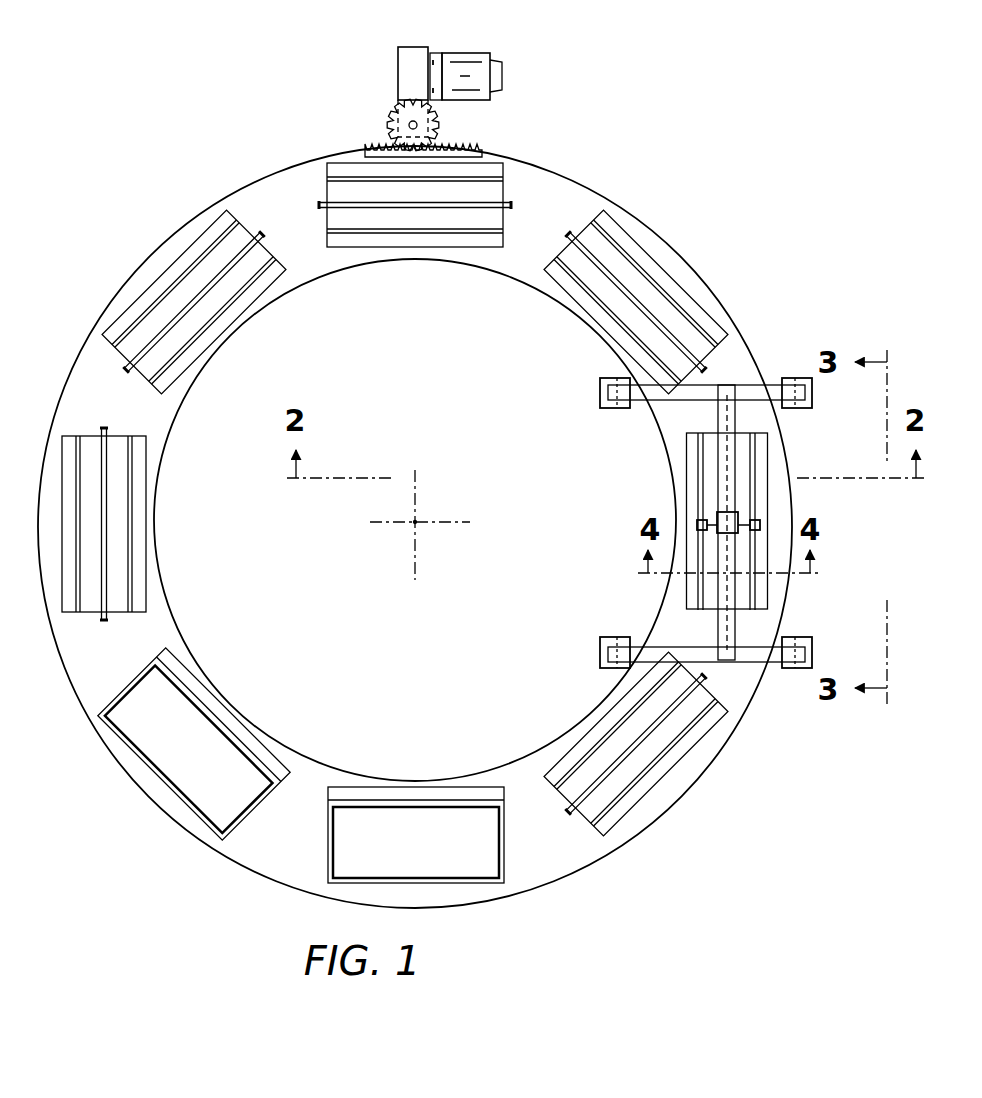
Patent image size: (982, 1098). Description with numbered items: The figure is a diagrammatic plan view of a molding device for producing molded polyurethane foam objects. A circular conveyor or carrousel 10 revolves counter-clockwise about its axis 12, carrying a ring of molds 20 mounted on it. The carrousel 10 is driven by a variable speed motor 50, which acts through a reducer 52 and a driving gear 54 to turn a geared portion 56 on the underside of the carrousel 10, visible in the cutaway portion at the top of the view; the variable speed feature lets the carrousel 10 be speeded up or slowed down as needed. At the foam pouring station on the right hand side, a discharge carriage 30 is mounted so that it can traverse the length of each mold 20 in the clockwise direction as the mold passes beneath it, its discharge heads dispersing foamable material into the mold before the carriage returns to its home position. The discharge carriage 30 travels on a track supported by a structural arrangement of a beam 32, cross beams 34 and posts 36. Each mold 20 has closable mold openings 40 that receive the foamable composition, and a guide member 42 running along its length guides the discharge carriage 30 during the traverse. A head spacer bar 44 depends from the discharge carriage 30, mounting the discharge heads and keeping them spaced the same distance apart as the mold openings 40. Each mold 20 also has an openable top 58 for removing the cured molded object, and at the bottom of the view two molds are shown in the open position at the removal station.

The carrousel 10 is at (39, 712).
The axis 12 is at (412, 524).
The mold 20 is at (506, 177).
The discharge carriage 30 is at (717, 515).
The beam 32 is at (718, 415).
The cross beams 34 is at (745, 385).
The posts 36 is at (612, 383).
The mold openings 40 is at (328, 175).
The guide member 42 is at (418, 204).
The head spacer bar 44 is at (698, 522).
The variable speed motor 50 is at (482, 56).
The reducer 52 is at (418, 52).
The driving gear 54 is at (392, 115).
The geared portion 56 is at (450, 148).
The top 58 is at (489, 792).